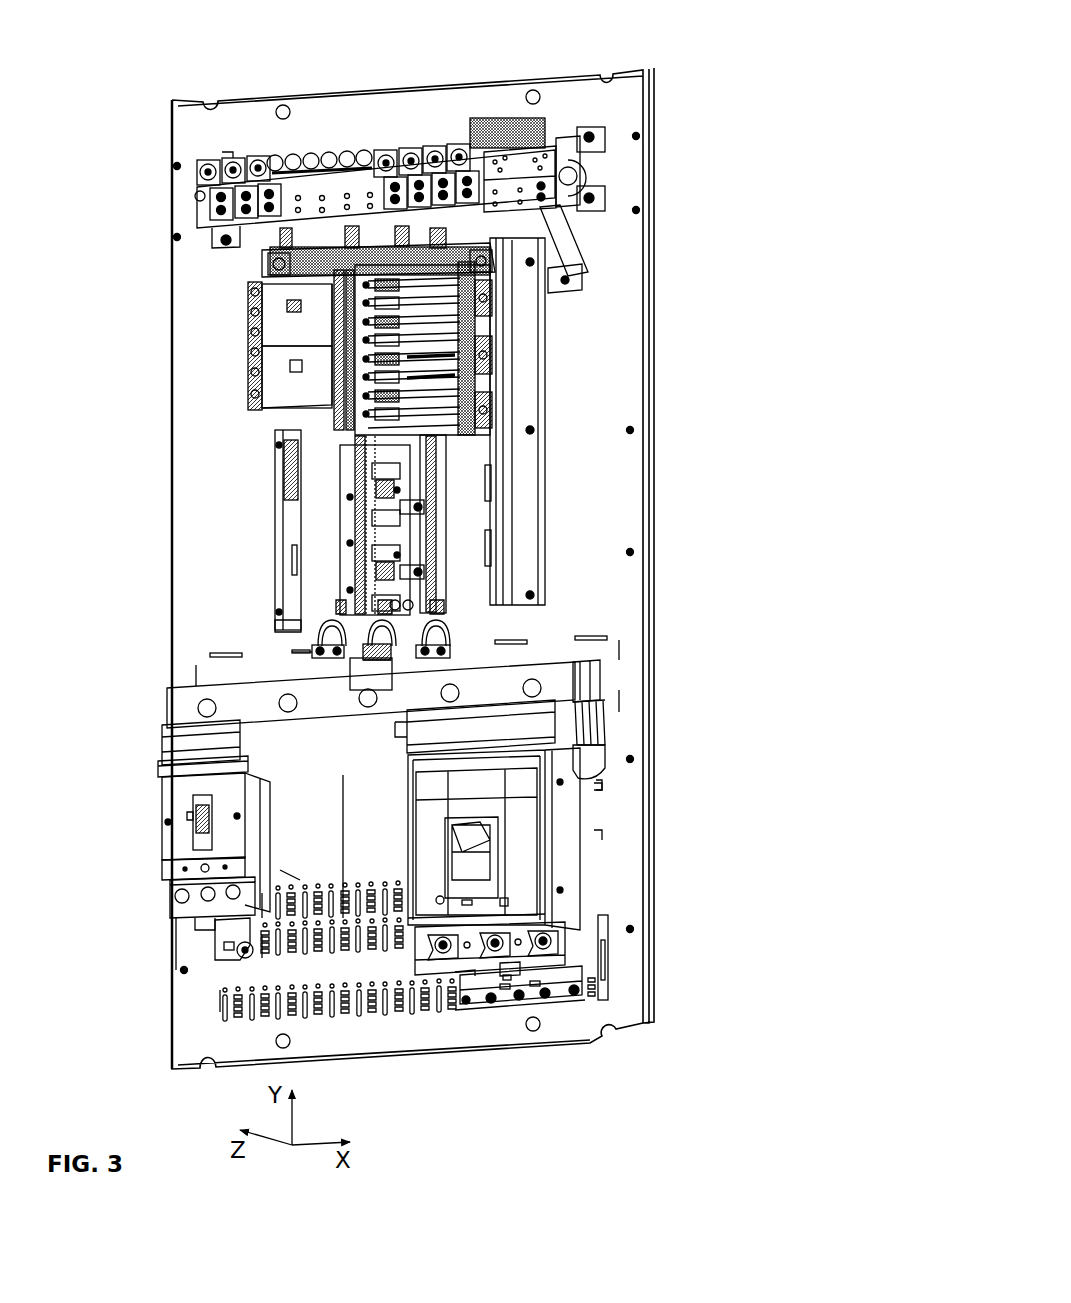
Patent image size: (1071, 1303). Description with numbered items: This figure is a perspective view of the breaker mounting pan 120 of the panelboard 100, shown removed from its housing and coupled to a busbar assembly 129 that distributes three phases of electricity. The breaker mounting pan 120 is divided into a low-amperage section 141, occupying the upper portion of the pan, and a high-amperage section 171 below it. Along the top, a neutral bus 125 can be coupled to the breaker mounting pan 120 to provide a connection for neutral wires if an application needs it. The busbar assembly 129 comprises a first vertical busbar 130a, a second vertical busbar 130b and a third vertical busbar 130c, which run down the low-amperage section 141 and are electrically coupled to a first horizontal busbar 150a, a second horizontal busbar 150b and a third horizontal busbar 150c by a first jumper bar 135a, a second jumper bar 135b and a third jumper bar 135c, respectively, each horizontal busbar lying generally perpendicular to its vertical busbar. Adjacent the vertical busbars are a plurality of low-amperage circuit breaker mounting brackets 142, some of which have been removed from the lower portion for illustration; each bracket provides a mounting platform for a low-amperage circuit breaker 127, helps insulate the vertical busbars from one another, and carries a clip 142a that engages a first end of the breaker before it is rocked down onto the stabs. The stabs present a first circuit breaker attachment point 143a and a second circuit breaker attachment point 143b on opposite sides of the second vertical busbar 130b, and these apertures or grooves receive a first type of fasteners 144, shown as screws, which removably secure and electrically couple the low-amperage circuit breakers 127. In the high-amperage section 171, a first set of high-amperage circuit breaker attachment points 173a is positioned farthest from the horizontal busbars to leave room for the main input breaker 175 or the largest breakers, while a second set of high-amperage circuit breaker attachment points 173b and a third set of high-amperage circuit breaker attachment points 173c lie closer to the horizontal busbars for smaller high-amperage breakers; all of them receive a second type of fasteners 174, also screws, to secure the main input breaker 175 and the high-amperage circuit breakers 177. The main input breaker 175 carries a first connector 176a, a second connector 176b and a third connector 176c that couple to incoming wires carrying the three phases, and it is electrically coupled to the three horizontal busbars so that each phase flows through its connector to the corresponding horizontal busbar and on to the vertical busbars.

The panelboard 100 is at (718, 55).
The breaker mounting pan 120 is at (193, 133).
The neutral bus 125 is at (293, 182).
The low-amperage circuit breaker 127 is at (243, 305).
The busbar assembly 129 is at (343, 772).
The first vertical busbar 130a is at (298, 572).
The second vertical busbar 130b is at (298, 620).
The third vertical busbar 130c is at (295, 487).
The first jumper bar 135a is at (316, 647).
The second jumper bar 135b is at (370, 663).
The third jumper bar 135c is at (430, 628).
The low-amperage section 141 is at (630, 262).
The low-amperage circuit breaker mounting bracket 142 is at (490, 462).
The clip 142a is at (493, 355).
The first circuit breaker attachment point 143a is at (440, 518).
The second circuit breaker attachment point 143b is at (355, 528).
The first type of fasteners 144 is at (300, 405).
The first horizontal busbar 150a is at (600, 775).
The second horizontal busbar 150b is at (585, 684).
The third horizontal busbar 150c is at (594, 676).
The high-amperage section 171 is at (630, 716).
The first set of high-amperage circuit breaker attachment points 173a is at (212, 1015).
The second set of high-amperage circuit breaker attachment points 173b is at (260, 963).
The third set of high-amperage circuit breaker attachment points 173c is at (297, 875).
The second type of fasteners 174 is at (240, 951).
The main input breaker 175 is at (530, 910).
The first connector 176a is at (567, 975).
The second connector 176b is at (510, 977).
The third connector 176c is at (465, 975).
The high-amperage circuit breaker 177 is at (178, 845).